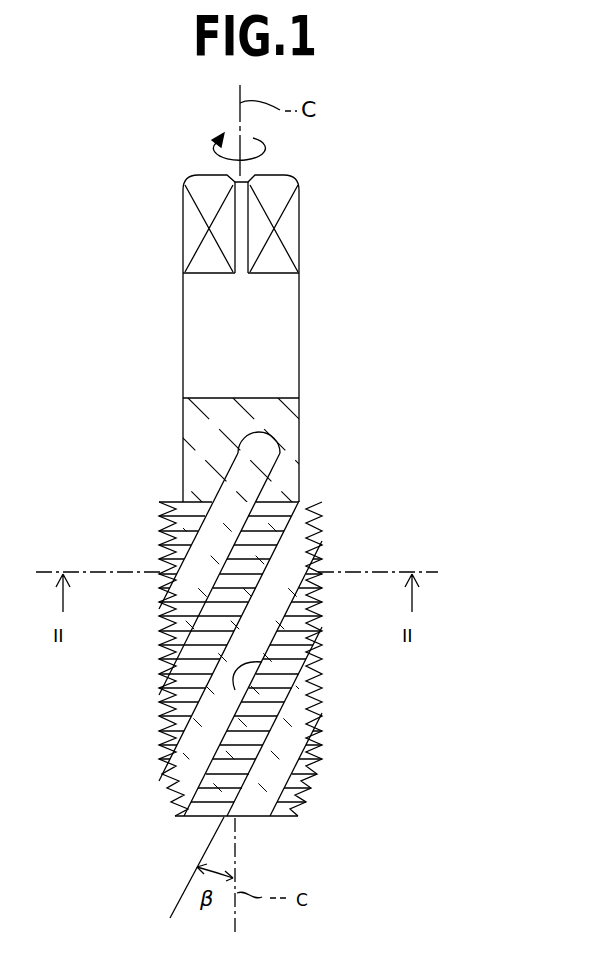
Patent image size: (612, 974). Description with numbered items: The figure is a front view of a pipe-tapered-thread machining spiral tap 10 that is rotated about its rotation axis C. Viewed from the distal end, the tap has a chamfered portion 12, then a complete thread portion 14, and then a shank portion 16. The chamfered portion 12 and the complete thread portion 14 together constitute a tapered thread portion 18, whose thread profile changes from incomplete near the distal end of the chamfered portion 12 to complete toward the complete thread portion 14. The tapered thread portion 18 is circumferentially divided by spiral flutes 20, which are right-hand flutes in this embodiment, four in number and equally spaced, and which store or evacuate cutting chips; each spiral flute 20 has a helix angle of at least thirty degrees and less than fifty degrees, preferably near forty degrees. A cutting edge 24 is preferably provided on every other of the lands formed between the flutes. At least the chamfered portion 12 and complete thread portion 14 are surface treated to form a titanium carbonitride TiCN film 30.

The pipe-tapered-thread machining spiral tap 10 is at (418, 237).
The chamfered portion 12 is at (162, 762).
The complete thread portion 14 is at (152, 523).
The shank portion 16 is at (183, 330).
The tapered thread portion 18 is at (314, 607).
The spiral flute 20 is at (190, 528).
The cutting edge 24 is at (262, 661).
The titanium carbonitride TiCN film 30 is at (300, 424).